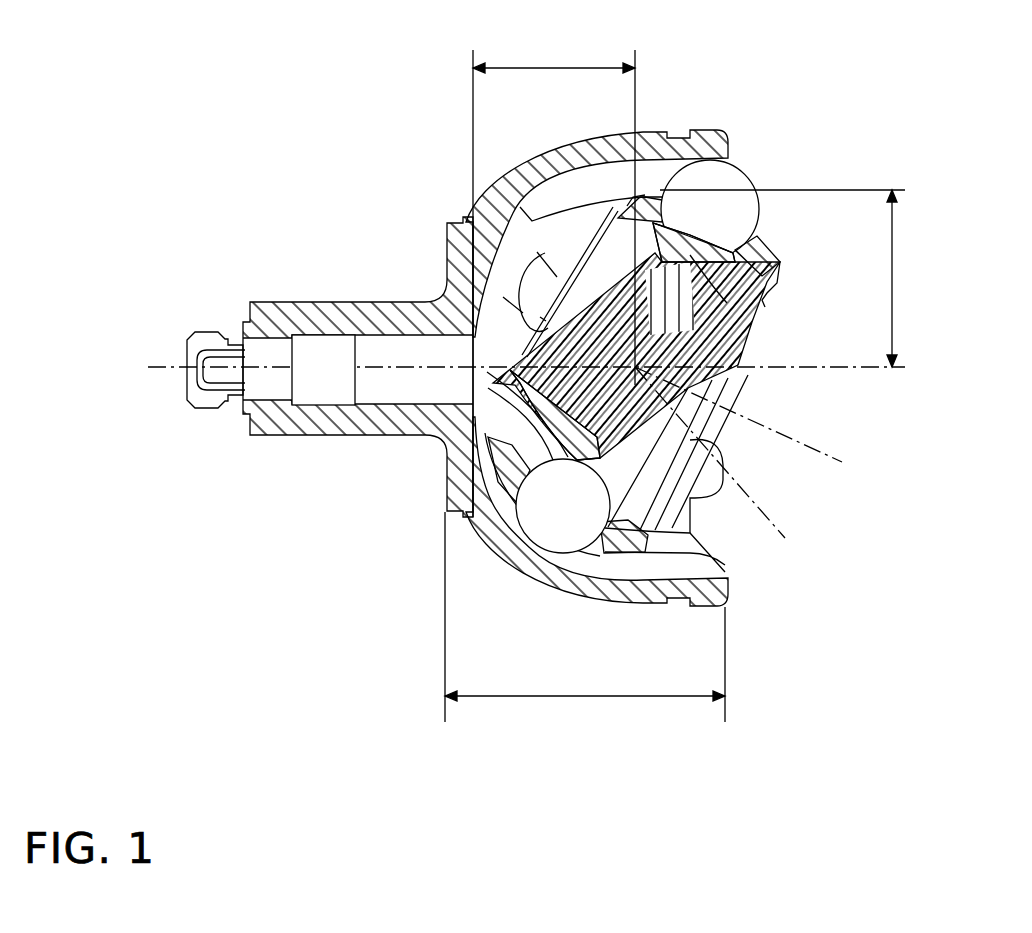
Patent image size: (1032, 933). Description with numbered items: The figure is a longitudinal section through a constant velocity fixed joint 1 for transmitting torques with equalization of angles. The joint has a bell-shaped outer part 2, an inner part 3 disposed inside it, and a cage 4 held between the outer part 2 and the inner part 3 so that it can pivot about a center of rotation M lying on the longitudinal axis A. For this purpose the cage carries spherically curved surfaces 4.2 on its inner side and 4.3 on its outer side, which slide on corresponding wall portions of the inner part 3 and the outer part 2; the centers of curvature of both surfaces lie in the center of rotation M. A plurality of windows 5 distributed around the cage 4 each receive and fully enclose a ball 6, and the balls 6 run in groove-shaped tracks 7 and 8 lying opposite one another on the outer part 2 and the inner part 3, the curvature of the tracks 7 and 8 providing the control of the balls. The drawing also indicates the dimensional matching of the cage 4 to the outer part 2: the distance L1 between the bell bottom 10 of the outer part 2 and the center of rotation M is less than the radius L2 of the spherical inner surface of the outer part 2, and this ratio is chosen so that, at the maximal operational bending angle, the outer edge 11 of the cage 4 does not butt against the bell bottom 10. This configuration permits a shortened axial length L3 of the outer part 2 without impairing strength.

The constant velocity fixed joint 1 is at (347, 223).
The outer part 2 is at (538, 168).
The inner part 3 is at (717, 332).
The cage 4 is at (757, 245).
The inner spherically curved surface 4.2 is at (618, 217).
The outer spherically curved surface 4.3 is at (777, 257).
The window 5 is at (757, 222).
The ball 6 is at (732, 177).
The track 7 is at (657, 177).
The track 8 is at (748, 303).
The bell bottom 10 is at (473, 378).
The outer edge 11 is at (627, 206).
The longitudinal axis A is at (148, 371).
The center of rotation M is at (635, 367).
The distance L1 is at (554, 53).
The radius L2 is at (792, 278).
The axial length L3 is at (585, 621).